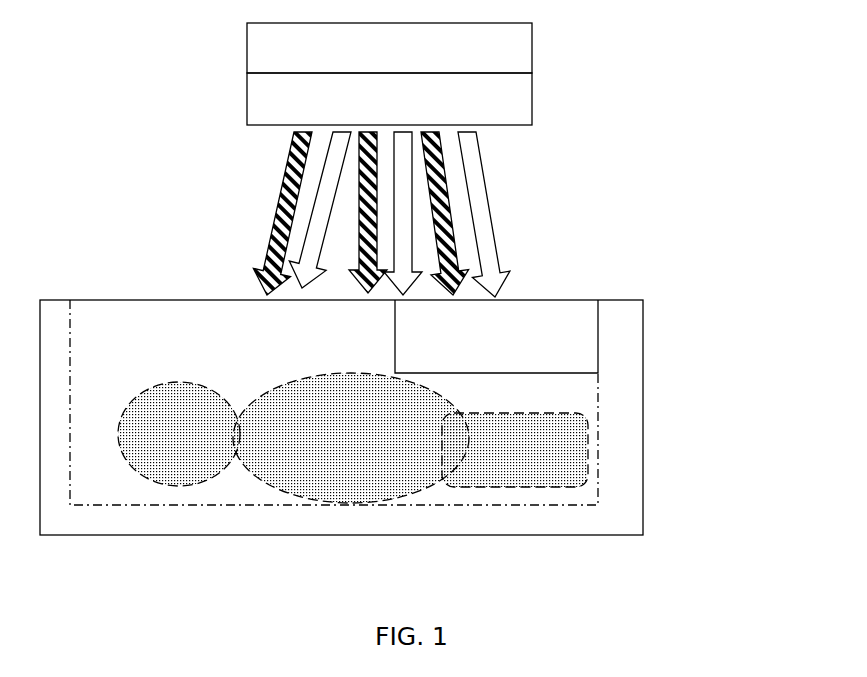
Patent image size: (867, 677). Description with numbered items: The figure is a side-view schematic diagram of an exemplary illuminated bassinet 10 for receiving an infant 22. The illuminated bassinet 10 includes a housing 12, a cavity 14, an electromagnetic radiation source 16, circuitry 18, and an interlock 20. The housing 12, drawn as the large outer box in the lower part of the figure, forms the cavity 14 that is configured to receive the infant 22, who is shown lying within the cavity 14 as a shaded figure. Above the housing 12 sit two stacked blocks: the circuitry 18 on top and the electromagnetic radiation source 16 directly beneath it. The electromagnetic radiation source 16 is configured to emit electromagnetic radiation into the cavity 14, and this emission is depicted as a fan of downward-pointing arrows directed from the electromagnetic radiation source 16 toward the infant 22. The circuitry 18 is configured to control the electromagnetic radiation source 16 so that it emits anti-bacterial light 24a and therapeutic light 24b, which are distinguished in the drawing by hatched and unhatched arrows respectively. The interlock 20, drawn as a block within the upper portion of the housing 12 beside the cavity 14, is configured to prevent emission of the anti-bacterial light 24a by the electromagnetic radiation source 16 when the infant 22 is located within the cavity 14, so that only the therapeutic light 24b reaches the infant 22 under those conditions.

The illuminated bassinet 10 is at (95, 61).
The housing 12 is at (636, 418).
The cavity 14 is at (94, 415).
The electromagnetic radiation source 16 is at (477, 109).
The circuitry 18 is at (452, 64).
The interlock 20 is at (560, 351).
The infant 22 is at (369, 458).
The anti-bacterial light 24a is at (438, 304).
The therapeutic light 24b is at (282, 256).